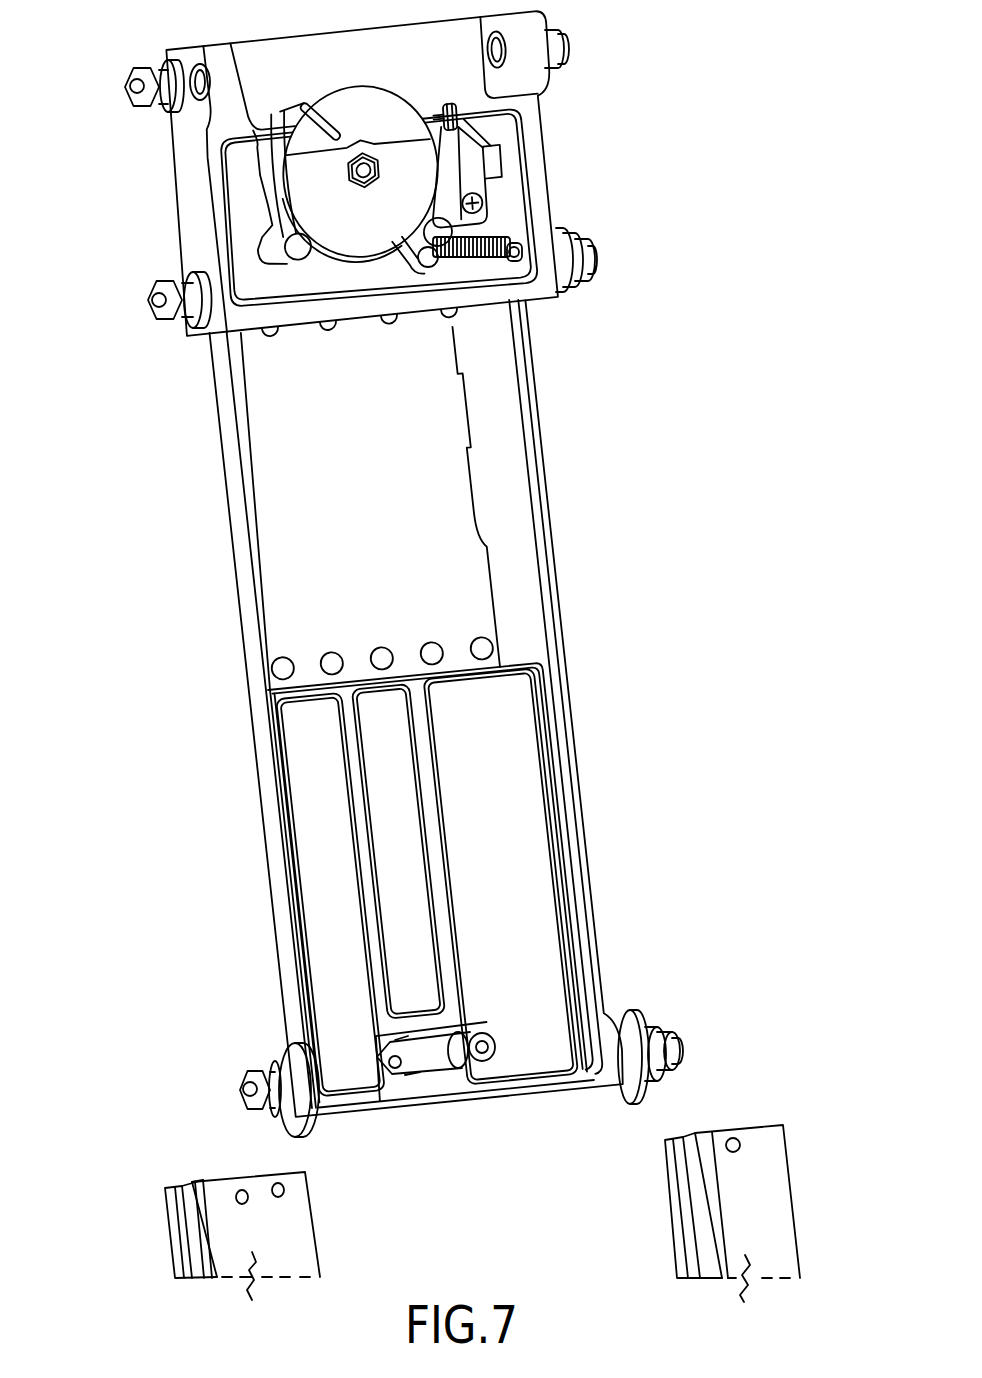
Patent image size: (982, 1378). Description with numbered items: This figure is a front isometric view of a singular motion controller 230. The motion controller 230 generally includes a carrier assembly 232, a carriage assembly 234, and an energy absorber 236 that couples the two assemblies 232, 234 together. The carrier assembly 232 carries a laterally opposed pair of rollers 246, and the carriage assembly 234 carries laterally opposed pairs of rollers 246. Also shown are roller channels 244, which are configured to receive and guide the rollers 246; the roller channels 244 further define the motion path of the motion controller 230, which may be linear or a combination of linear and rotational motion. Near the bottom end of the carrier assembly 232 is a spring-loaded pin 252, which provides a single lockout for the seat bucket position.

The motion controller 230 is at (140, 392).
The carrier assembly 232 is at (313, 897).
The carriage assembly 234 is at (185, 200).
The energy absorber 236 is at (287, 605).
The roller channels 244 is at (173, 1228).
The rollers 246 is at (126, 80).
The spring-loaded pin 252 is at (495, 1050).